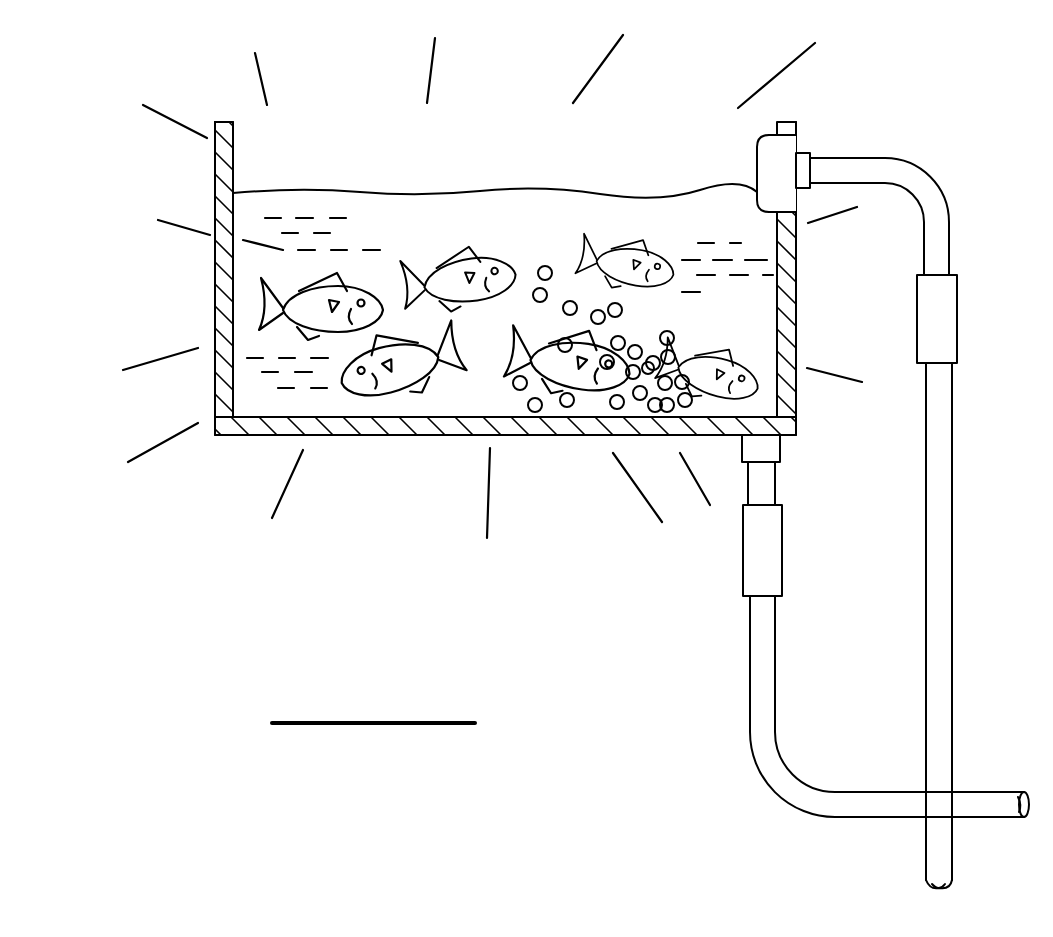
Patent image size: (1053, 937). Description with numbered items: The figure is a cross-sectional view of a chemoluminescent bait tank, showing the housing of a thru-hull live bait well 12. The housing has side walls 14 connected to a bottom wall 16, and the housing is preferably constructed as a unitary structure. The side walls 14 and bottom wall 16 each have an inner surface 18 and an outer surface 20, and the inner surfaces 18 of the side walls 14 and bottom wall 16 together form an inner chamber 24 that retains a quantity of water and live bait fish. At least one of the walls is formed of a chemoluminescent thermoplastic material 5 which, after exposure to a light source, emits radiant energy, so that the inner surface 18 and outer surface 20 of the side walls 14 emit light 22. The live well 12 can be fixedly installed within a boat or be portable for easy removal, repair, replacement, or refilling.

The thru-hull live bait well 12 is at (215, 185).
The side walls 14 is at (215, 300).
The bottom wall 16 is at (333, 438).
The inner surface 18 is at (237, 150).
The outer surface 20 is at (798, 283).
The light 22 is at (165, 445).
The inner chamber 24 is at (667, 145).
The chemoluminescent thermoplastic material 5 is at (530, 435).